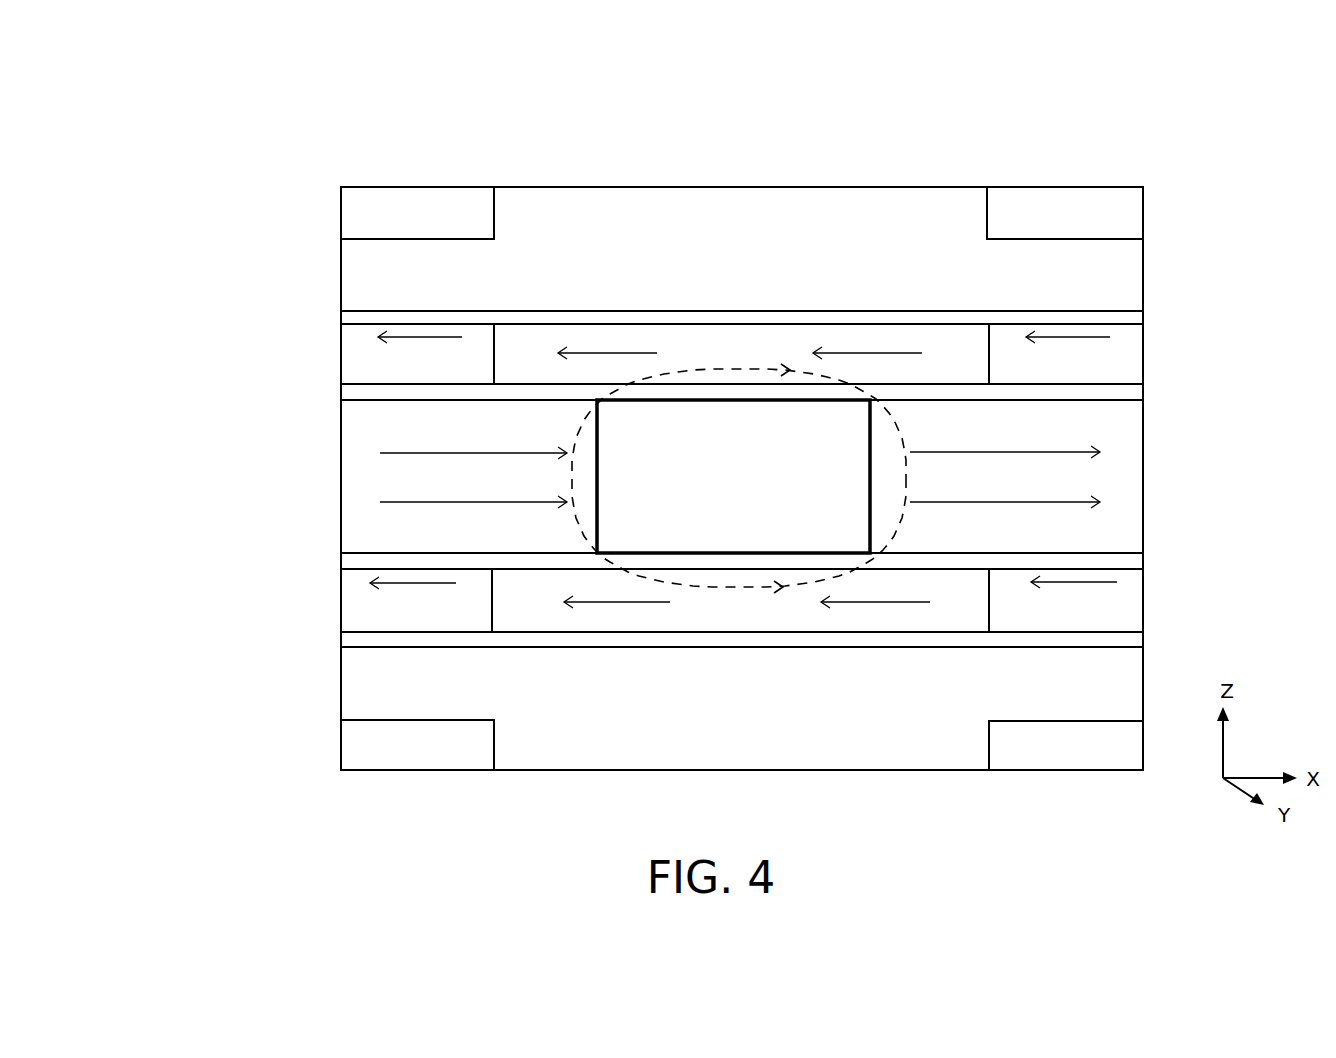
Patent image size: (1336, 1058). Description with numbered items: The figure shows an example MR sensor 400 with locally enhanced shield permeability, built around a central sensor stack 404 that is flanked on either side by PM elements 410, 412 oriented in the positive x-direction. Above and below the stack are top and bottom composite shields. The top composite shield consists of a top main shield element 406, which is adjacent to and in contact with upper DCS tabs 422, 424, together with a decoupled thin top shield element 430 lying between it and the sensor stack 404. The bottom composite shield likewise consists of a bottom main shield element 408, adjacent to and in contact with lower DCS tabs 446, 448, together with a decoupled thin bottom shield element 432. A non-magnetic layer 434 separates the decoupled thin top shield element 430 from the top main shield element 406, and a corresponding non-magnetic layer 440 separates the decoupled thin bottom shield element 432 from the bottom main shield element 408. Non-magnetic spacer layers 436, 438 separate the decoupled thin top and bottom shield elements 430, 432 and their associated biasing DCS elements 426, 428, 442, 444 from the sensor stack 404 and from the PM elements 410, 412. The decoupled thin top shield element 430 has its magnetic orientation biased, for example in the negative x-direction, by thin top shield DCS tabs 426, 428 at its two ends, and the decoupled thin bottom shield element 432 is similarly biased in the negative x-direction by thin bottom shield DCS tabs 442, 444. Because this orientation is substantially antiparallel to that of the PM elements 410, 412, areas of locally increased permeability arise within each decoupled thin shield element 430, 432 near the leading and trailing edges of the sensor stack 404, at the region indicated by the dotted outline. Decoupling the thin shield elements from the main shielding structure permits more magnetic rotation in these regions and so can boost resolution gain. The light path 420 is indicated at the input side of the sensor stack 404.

The MR sensor 400 is at (213, 125).
The sensor stack 404 is at (713, 485).
The top main shield element 406 is at (721, 261).
The bottom main shield element 408 is at (721, 722).
The PM element 410 is at (446, 489).
The PM element 412 is at (985, 487).
The light propagation path 420 is at (400, 453).
The upper DCS tab 422 is at (396, 226).
The upper DCS tab 424 is at (1045, 226).
The thin top shield DCS tab 426 is at (396, 365).
The thin top shield DCS tab 428 is at (1045, 365).
The decoupled thin top shield element 430 is at (725, 362).
The decoupled thin bottom shield element 432 is at (716, 617).
The non-magnetic layer 434 is at (341, 311).
The non-magnetic spacer layer 436 is at (341, 387).
The non-magnetic spacer layer 438 is at (341, 560).
The non-magnetic layer 440 is at (341, 635).
The thin bottom shield DCS tab 442 is at (396, 612).
The thin bottom shield DCS tab 444 is at (1045, 612).
The lower DCS tab 446 is at (396, 758).
The lower DCS tab 448 is at (1045, 758).